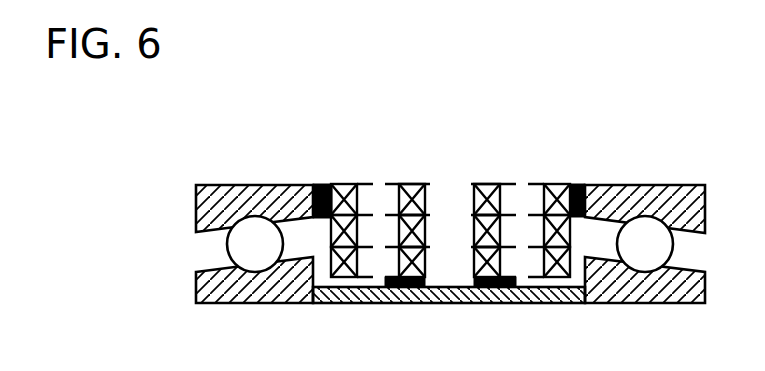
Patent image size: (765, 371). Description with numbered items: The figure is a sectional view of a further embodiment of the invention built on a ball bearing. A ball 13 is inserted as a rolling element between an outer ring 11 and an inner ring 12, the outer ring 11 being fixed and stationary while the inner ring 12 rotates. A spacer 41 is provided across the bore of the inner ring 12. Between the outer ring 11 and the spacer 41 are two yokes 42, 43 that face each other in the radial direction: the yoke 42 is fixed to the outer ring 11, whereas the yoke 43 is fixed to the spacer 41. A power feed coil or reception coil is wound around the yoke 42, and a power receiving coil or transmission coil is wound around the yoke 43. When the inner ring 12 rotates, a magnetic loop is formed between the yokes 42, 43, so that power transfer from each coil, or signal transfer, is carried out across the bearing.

The outer ring 11 is at (213, 211).
The inner ring 12 is at (210, 290).
The ball 13 is at (228, 246).
The spacer 41 is at (392, 292).
The yoke 42 is at (344, 183).
The yoke 43 is at (414, 183).